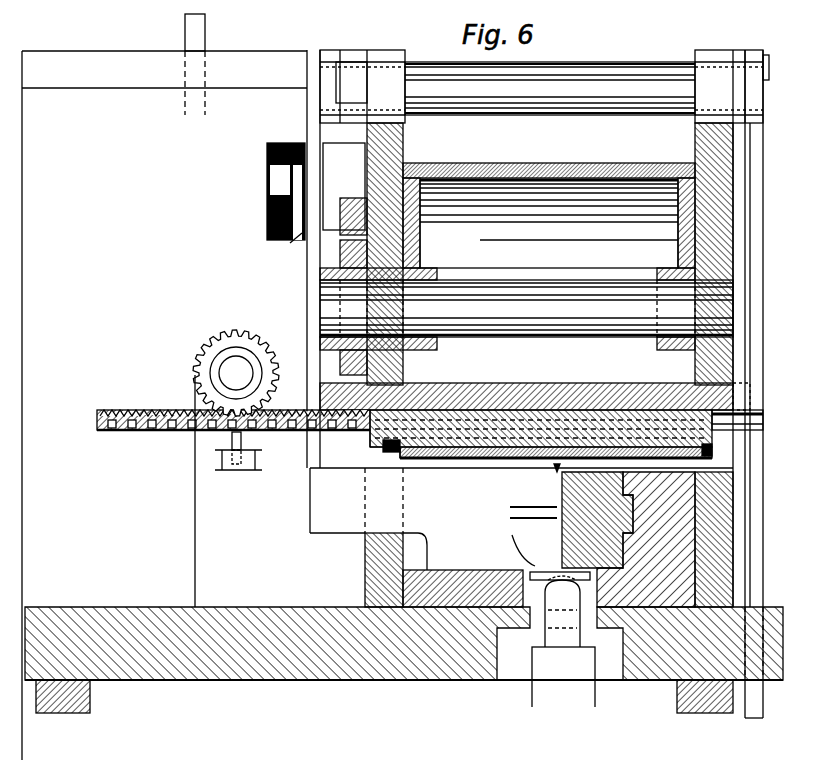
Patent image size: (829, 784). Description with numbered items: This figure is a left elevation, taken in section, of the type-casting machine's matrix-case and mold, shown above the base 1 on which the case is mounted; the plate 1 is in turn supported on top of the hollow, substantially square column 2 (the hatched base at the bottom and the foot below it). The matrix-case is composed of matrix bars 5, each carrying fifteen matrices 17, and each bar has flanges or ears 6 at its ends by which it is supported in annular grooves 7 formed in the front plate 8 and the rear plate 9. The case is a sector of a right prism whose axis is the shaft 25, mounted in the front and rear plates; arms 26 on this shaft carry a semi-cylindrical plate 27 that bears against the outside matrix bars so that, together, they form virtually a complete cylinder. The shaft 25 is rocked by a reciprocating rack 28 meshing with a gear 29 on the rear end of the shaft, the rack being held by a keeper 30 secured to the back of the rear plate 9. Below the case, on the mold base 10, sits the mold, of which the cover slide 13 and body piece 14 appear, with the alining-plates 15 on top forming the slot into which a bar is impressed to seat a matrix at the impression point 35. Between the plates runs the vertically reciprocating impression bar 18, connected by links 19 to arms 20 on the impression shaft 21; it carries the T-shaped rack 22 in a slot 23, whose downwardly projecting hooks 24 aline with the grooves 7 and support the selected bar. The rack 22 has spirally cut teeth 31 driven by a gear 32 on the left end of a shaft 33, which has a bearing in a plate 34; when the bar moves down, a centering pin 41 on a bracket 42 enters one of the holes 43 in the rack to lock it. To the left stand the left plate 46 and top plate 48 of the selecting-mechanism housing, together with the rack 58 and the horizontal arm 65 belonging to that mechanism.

The plate 1 is at (300, 660).
The column 2 is at (90, 698).
The matrix bars 5 is at (400, 458).
The flanges or ears 6 is at (396, 462).
The annular grooves 7 is at (420, 172).
The front plate 8 is at (700, 148).
The rear plate 9 is at (392, 144).
The mold base 10 is at (478, 580).
The cover slide 13 is at (580, 532).
The body piece 14 is at (521, 537).
The alining-plates 15 is at (392, 460).
The matrices 17 is at (466, 460).
The impression bar 18 is at (474, 390).
The links 19 is at (307, 100).
The arms 20 is at (350, 66).
The impression shaft 21 is at (612, 72).
The T-shaped rack 22 is at (575, 420).
The slot 23 is at (745, 426).
The hooks 24 is at (385, 446).
The shaft 25 is at (528, 318).
The arms 26 is at (416, 232).
The semi-cylindrical plate 27 is at (520, 168).
The reciprocating rack 28 is at (350, 210).
The gear 29 is at (340, 262).
The keeper 30 is at (344, 186).
The teeth 31 is at (114, 410).
The gear 32 is at (200, 358).
The shaft 33 is at (238, 373).
The plate 34 is at (216, 491).
The impression point 35 is at (557, 470).
The centering pin 41 is at (242, 440).
The bracket 42 is at (224, 470).
The holes 43 is at (180, 432).
The left plate 46 is at (164, 405).
The top plate 48 is at (152, 64).
The rack 58 is at (290, 243).
The horizontal arm 65 is at (270, 186).